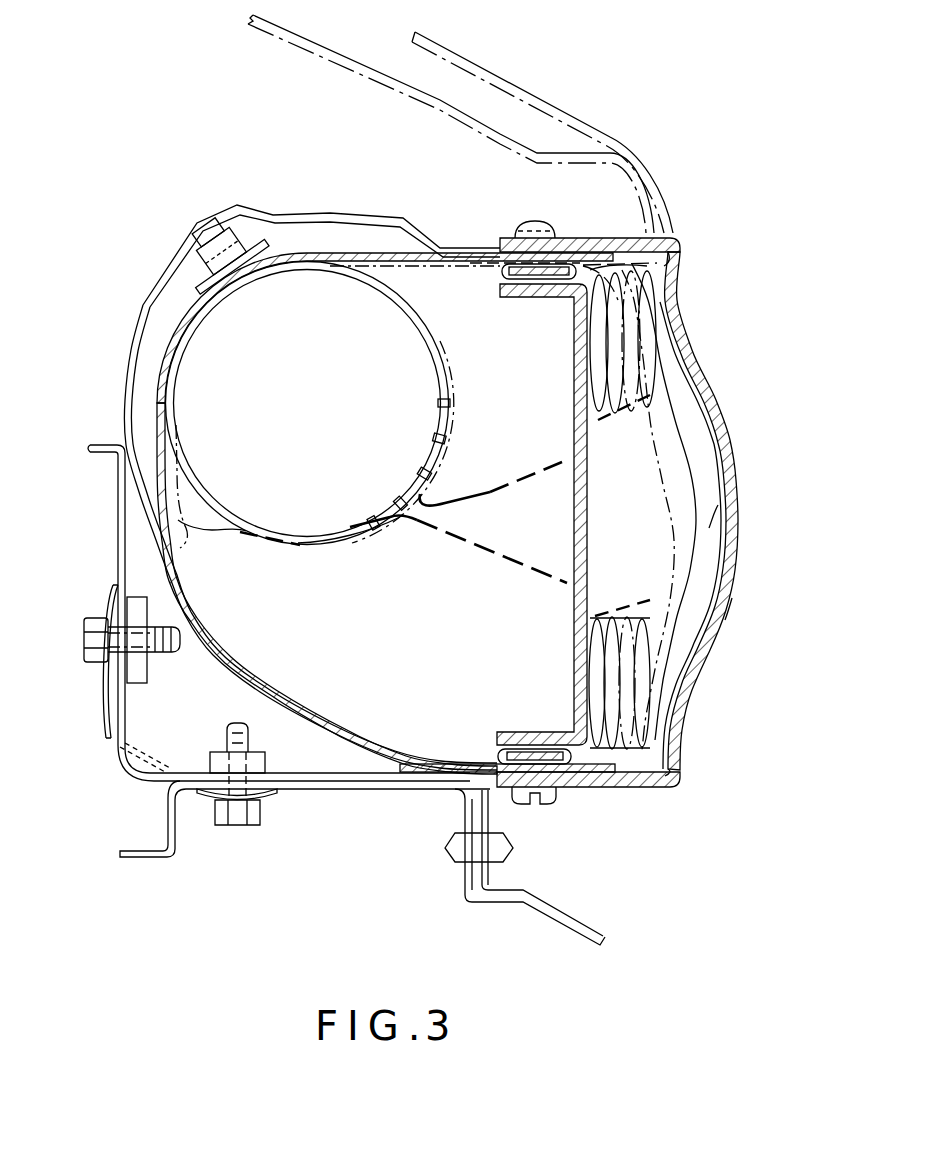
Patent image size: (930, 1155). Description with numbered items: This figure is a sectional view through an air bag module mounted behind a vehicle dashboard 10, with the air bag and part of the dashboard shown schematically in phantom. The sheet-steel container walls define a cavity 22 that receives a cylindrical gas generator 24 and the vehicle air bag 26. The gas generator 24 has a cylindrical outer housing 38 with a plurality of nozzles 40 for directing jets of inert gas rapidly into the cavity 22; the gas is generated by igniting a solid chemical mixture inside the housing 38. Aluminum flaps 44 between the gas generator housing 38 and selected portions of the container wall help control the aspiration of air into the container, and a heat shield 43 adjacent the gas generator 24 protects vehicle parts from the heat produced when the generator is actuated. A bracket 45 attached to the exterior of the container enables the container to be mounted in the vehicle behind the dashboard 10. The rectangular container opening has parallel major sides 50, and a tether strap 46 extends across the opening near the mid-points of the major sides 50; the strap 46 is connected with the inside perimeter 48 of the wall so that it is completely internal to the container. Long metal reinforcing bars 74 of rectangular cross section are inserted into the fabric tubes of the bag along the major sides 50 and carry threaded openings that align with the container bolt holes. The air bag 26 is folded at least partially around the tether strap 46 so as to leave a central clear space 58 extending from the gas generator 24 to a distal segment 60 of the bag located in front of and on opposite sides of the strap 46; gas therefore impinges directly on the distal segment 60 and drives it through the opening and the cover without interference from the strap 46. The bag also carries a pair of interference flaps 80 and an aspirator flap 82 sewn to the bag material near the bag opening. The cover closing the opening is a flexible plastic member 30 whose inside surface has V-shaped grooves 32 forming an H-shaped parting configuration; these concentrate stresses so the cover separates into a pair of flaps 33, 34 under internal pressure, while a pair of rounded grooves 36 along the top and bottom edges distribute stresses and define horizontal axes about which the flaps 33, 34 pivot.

The vehicle dashboard 10 is at (592, 108).
The cavity 22 is at (478, 514).
The cylindrical gas generator 24 is at (165, 345).
The vehicle air bag 26 is at (460, 246).
The flexible plastic member 30 is at (698, 505).
The grooves 32 is at (712, 515).
The flap 33 is at (735, 606).
The flap 34 is at (698, 330).
The rounded grooves 36 is at (686, 248).
The cylindrical outer housing 38 is at (420, 305).
The nozzles 40 is at (437, 404).
The heat shield 43 is at (345, 213).
The aluminum flaps 44 is at (375, 253).
The bracket 45 is at (462, 862).
The tether strap 46 is at (590, 560).
The inside perimeter 48 is at (668, 288).
The major sides 50 is at (650, 236).
The central clear space 58 is at (542, 537).
The distal segment 60 is at (724, 559).
The metal reinforcing bar 74 is at (505, 275).
The interference flaps 80 is at (722, 440).
The aspirator flap 82 is at (662, 690).